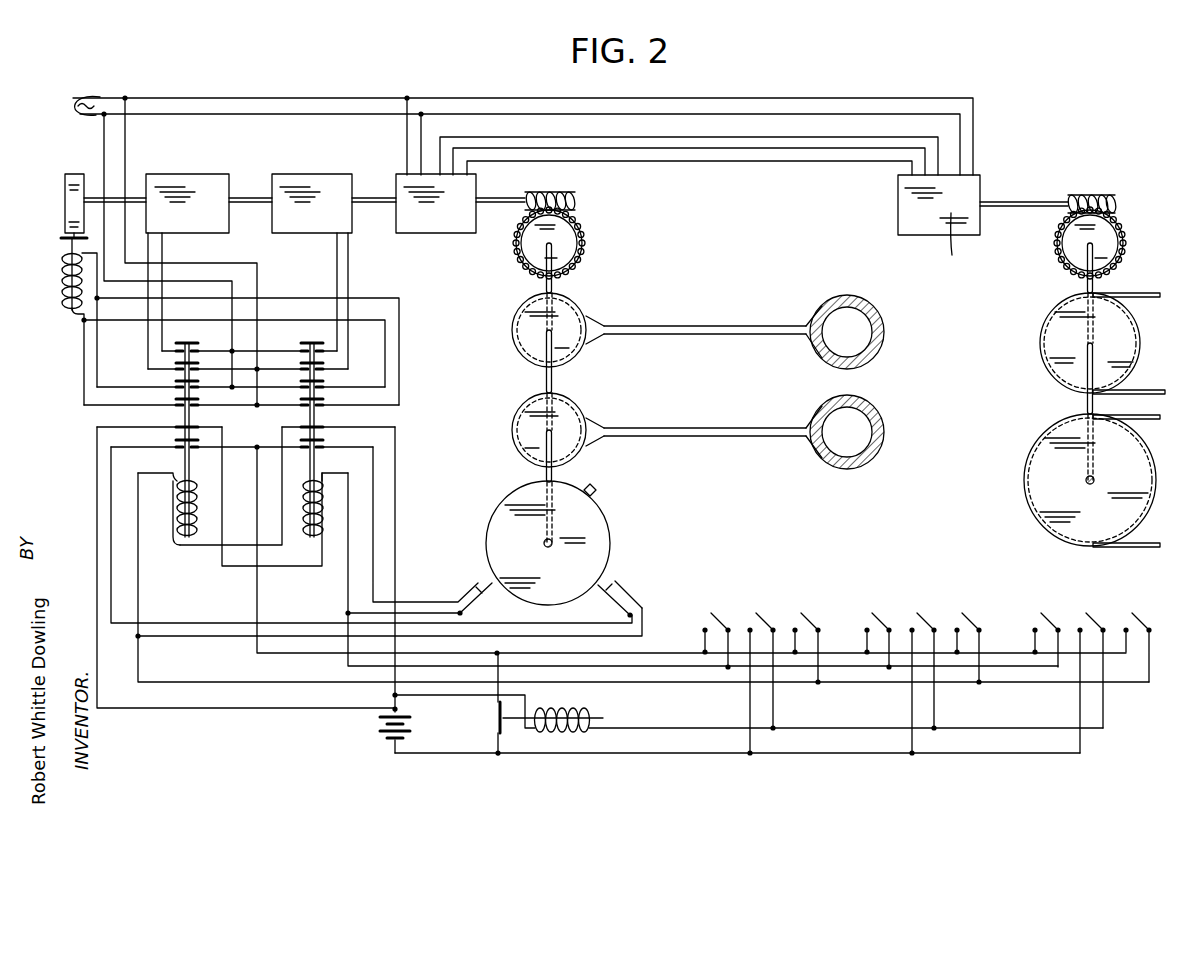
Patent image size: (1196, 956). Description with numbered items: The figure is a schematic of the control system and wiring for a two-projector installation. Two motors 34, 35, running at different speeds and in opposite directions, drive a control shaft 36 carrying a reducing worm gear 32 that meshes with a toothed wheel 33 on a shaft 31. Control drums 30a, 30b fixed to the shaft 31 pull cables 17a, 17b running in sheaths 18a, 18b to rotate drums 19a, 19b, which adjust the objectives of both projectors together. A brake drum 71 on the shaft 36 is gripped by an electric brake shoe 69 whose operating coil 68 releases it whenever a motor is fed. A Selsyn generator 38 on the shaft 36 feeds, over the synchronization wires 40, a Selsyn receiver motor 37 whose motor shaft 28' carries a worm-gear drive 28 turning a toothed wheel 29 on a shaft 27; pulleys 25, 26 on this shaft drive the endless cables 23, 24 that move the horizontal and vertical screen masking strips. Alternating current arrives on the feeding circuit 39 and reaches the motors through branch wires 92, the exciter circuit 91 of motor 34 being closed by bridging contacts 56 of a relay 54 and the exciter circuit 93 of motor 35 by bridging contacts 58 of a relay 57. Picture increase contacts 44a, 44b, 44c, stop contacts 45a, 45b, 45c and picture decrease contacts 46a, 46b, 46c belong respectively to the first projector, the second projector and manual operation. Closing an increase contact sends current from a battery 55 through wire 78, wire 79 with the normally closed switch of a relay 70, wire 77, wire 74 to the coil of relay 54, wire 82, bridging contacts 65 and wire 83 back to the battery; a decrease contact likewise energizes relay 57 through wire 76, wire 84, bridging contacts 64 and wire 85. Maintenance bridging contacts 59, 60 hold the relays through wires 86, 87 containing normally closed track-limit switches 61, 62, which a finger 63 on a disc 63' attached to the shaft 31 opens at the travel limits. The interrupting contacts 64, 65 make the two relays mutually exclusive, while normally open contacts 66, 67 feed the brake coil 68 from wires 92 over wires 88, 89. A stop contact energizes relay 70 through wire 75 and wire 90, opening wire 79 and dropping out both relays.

The alternating current feeding circuit 39 is at (76, 100).
The Selsyn synchronization circuit wires 40 is at (804, 137).
The brake drum 71 is at (62, 203).
The electric brake shoe 69 is at (60, 239).
The operating coil 68 is at (62, 283).
The motor 35 is at (176, 183).
The motor 34 is at (319, 183).
The control shaft 36 is at (368, 195).
The Selsyn generator 38 is at (437, 226).
The exciter circuit 93 is at (164, 256).
The branch wires 92 is at (232, 292).
The exciter circuit 91 is at (349, 262).
The reducing worm gear 32 is at (570, 193).
The toothed wheel 33 is at (586, 243).
The shaft 31 is at (545, 380).
The control drum 30a is at (516, 332).
The control drum 30b is at (516, 432).
The sheath 18a is at (700, 334).
The sheath 18b is at (712, 436).
The cable 17a is at (800, 340).
The cable 17b is at (805, 442).
The drum 19a is at (880, 336).
The drum 19b is at (880, 438).
The finger 63 is at (611, 490).
The disc 63' is at (573, 543).
The Selsyn receiver motor 37 is at (913, 209).
The motor shaft 28' is at (1024, 188).
The reducing worm-gear drive 28 is at (1092, 185).
The toothed wheel 29 is at (1058, 244).
The shaft 27 is at (1087, 395).
The endless cable 23 is at (1158, 293).
The pulley 25 is at (1052, 340).
The pulley 26 is at (1032, 475).
The endless cable 24 is at (1148, 548).
The wire 88 is at (400, 357).
The wire 89 is at (82, 362).
The bridging contacts 58 is at (166, 347).
The bridging contacts 56 is at (330, 350).
The bridging contacts 67 is at (172, 386).
The bridging contacts 66 is at (330, 388).
The interrupting bridging contacts 65 is at (174, 430).
The interrupting bridging contacts 64 is at (327, 430).
The maintenance bridging contacts 60 is at (186, 445).
The maintenance bridging contacts 59 is at (316, 446).
The relay 57 is at (177, 509).
The relay 54 is at (324, 509).
The wire 84 is at (238, 541).
The wire 82 is at (243, 568).
The wire 83 is at (96, 466).
The wire 87 is at (110, 493).
The wire 76 is at (141, 596).
The wire 77 is at (260, 602).
The wire 74 is at (346, 594).
The wire 86 is at (374, 548).
The wire 85 is at (397, 502).
The track-limit switch 61 is at (470, 592).
The track-limit switch 62 is at (625, 592).
The battery 55 is at (380, 725).
The wire 78 is at (432, 755).
The wire 90 is at (448, 697).
The wire 79 is at (497, 756).
The relay 70 is at (570, 710).
The wire 75 is at (834, 728).
The picture increase contact 44a is at (720, 596).
The stop contact 45a is at (774, 600).
The picture decrease contact 46a is at (823, 588).
The picture increase contact 44b is at (882, 596).
The stop contact 45b is at (940, 586).
The picture decrease contact 46b is at (992, 592).
The picture increase contact 44c is at (1053, 594).
The stop contact 45c is at (1108, 601).
The picture decrease contact 46c is at (1170, 594).